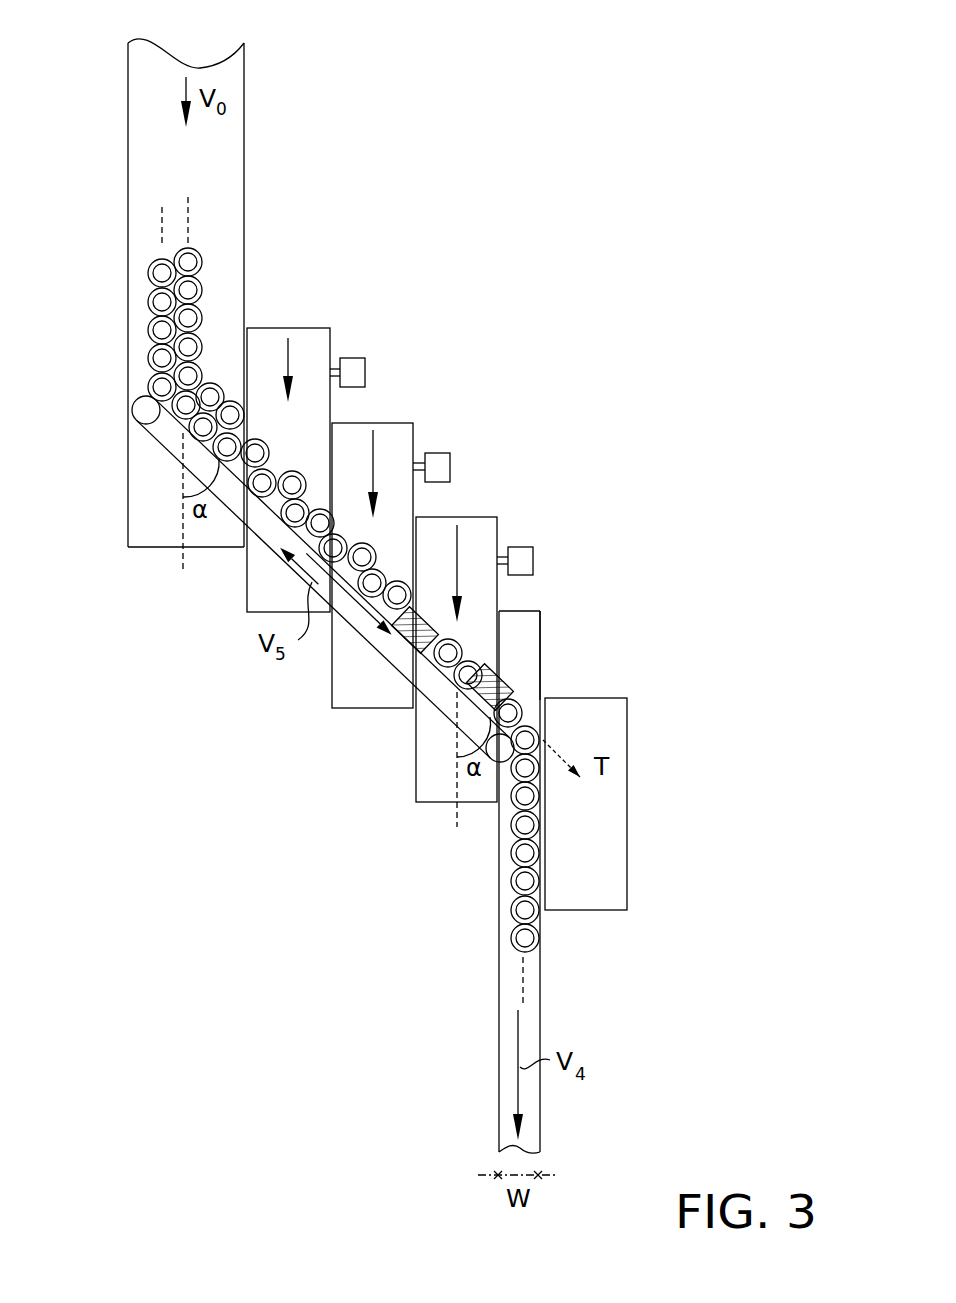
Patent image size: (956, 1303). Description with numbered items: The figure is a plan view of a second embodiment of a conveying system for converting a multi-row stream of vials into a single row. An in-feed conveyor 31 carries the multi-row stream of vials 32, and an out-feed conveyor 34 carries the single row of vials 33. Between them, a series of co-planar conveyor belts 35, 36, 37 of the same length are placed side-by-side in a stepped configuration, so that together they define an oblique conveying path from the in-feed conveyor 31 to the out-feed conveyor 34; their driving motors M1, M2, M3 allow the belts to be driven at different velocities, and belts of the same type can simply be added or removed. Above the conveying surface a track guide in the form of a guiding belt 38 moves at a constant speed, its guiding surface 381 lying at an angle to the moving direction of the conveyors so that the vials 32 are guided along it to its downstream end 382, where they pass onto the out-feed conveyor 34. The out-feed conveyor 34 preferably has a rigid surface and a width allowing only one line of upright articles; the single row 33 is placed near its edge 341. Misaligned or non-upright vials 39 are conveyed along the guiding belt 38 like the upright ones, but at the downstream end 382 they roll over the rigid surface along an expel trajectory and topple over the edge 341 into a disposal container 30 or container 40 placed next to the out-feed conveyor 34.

The disposal container 30 is at (468, 370).
The in-feed conveyor 31 is at (231, 131).
The vials 32 is at (148, 300).
The single row of vials 33 is at (507, 882).
The out-feed conveyor 34 is at (532, 983).
The conveyor belt 35 is at (320, 348).
The conveyor belt 36 is at (407, 438).
The conveyor belt 37 is at (493, 528).
The guiding belt 38 is at (371, 650).
The non-upright vials 39 is at (437, 622).
The container 40 is at (627, 850).
The edge 341 is at (542, 685).
The guiding surface 381 is at (270, 510).
The downstream end 382 is at (497, 804).
The driving motor M1 is at (355, 368).
The driving motor M2 is at (438, 472).
The driving motor M3 is at (520, 562).